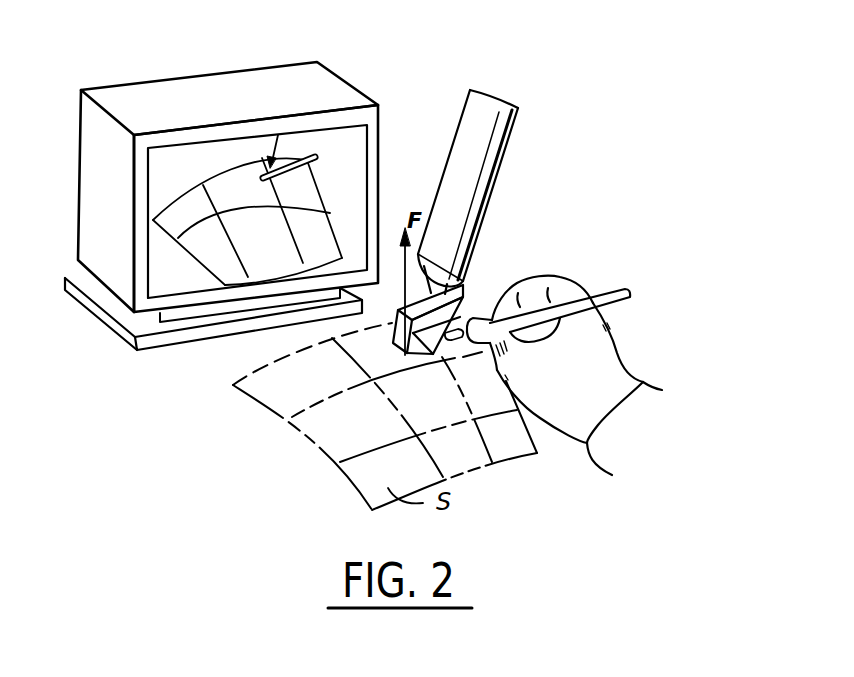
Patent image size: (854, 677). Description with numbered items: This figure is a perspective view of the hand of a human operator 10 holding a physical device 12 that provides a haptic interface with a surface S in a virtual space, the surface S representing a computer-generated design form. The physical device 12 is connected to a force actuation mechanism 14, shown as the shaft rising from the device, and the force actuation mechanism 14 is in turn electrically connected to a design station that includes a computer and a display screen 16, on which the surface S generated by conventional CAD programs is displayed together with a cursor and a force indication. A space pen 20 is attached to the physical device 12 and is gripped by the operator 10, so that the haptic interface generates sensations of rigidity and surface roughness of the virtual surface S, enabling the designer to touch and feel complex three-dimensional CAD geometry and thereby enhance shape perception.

The human operator 10 is at (643, 380).
The physical device 12 is at (465, 295).
The force actuation mechanism 14 is at (513, 137).
The display screen 16 is at (212, 83).
The space pen 20 is at (630, 285).